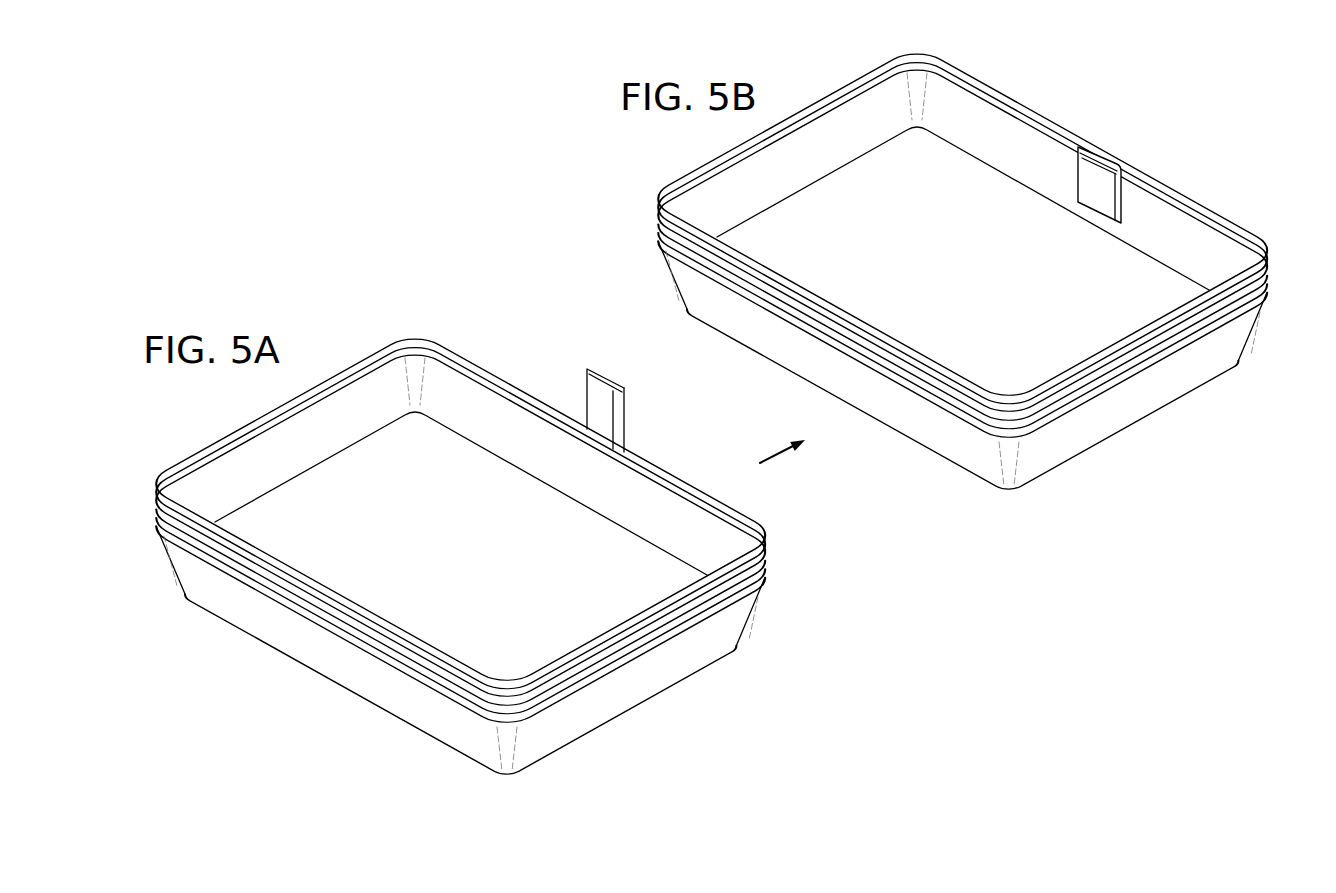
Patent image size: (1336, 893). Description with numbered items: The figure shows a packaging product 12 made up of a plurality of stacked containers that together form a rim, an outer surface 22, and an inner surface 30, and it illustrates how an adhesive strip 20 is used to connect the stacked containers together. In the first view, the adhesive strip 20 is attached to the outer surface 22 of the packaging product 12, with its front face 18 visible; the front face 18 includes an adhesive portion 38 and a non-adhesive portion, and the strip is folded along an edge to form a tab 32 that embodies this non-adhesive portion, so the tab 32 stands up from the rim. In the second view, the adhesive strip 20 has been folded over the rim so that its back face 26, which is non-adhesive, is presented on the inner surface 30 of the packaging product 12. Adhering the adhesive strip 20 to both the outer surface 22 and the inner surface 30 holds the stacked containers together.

In FIG. 5A, the packaging product 12 is at (148, 465).
In FIG. 5B, the packaging product 12 is at (650, 180).
In FIG. 5A, the inner surface 30 is at (316, 448).
In FIG. 5B, the inner surface 30 is at (818, 163).
In FIG. 5A, the outer surface 22 is at (348, 663).
In FIG. 5B, the outer surface 22 is at (850, 378).
In FIG. 5A, the adhesive strip 20 is at (582, 356).
In FIG. 5A, the front face 18 is at (597, 399).
In FIG. 5A, the adhesive portion 38 is at (603, 388).
In FIG. 5A, the tab 32 is at (618, 413).
In FIG. 5B, the back face 26 is at (1083, 193).